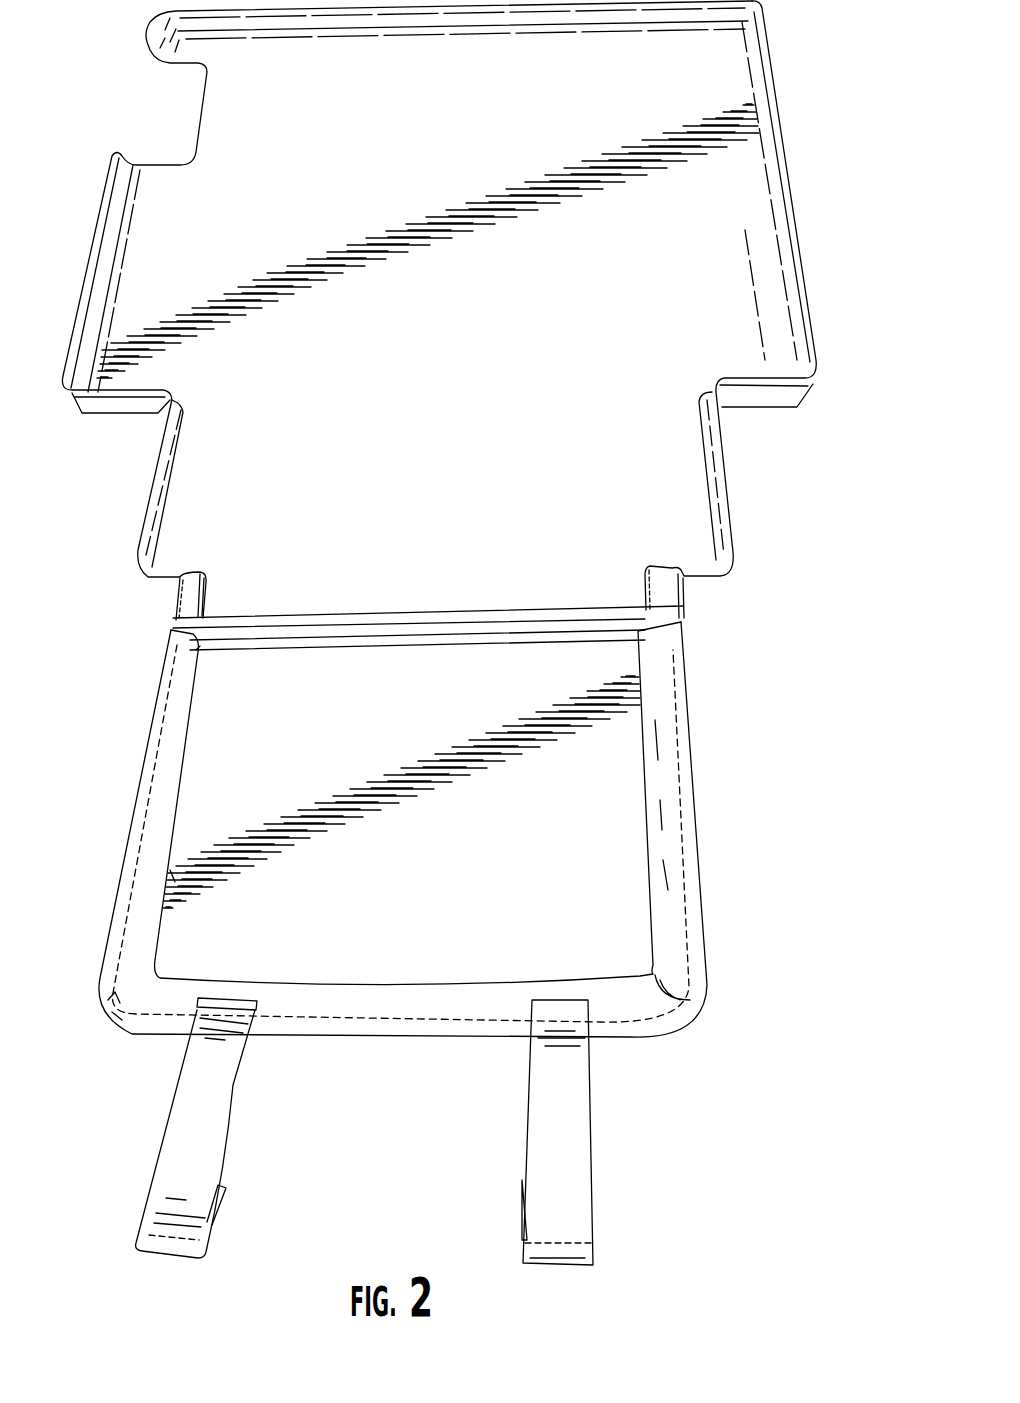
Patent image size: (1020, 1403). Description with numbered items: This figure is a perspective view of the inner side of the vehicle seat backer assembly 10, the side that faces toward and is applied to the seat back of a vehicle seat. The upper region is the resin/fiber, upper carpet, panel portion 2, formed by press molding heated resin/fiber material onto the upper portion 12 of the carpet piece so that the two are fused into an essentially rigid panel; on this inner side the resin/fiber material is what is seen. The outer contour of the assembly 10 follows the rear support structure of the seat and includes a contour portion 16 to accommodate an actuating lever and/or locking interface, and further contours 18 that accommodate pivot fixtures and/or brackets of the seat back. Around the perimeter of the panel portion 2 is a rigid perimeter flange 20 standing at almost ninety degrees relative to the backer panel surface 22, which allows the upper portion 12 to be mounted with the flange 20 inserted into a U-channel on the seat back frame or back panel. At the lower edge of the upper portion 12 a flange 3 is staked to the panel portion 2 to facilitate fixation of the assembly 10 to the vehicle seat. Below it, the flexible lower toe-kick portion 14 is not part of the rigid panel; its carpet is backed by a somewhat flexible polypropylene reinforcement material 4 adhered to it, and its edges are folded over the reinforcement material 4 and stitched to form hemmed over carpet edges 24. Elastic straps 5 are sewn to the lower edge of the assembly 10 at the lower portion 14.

The vehicle seat backer assembly 10 is at (842, 138).
The resin/fiber, upper carpet, panel portion 2 is at (694, 88).
The flange 3 is at (432, 590).
The polypropylene reinforcement material 4 is at (582, 938).
The elastic straps 5 is at (190, 1118).
The upper portion 12 is at (157, 247).
The lower toe-kick portion 14 is at (668, 792).
The contour portion 16 is at (196, 117).
The further contours 18 is at (146, 500).
The perimeter flange 20 is at (789, 223).
The backer panel surface 22 is at (720, 318).
The hemmed over carpet edges 24 is at (670, 695).